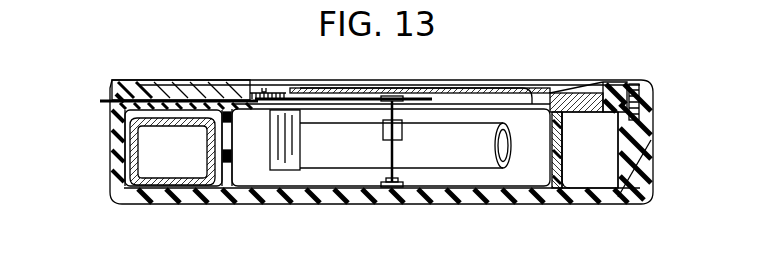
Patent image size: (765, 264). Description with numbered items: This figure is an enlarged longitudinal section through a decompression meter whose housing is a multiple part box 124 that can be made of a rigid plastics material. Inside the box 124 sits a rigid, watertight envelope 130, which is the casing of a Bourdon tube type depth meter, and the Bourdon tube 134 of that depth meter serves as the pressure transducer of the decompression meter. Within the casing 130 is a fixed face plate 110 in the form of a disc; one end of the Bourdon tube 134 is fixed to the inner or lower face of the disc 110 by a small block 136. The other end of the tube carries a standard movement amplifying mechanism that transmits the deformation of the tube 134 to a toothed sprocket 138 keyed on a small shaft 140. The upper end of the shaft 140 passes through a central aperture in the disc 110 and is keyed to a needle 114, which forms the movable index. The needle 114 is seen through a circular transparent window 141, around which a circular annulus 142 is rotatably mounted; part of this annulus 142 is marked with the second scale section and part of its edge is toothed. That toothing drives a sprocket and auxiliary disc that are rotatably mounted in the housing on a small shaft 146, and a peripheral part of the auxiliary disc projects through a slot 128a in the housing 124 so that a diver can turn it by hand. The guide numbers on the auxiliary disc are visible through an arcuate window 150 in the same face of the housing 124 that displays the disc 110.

The fixed face plate 110 is at (468, 105).
The needle 114 is at (306, 100).
The multiple part box 124 is at (657, 158).
The slot 128a is at (104, 100).
The envelope 130 is at (566, 165).
The Bourdon tube 134 is at (477, 162).
The small block 136 is at (285, 153).
The toothed sprocket 138 is at (393, 129).
The small shaft 140 is at (388, 158).
The transparent window 141 is at (418, 94).
The circular annulus 142 is at (560, 100).
The small shaft 146 is at (168, 109).
The arcuate window 150 is at (147, 97).